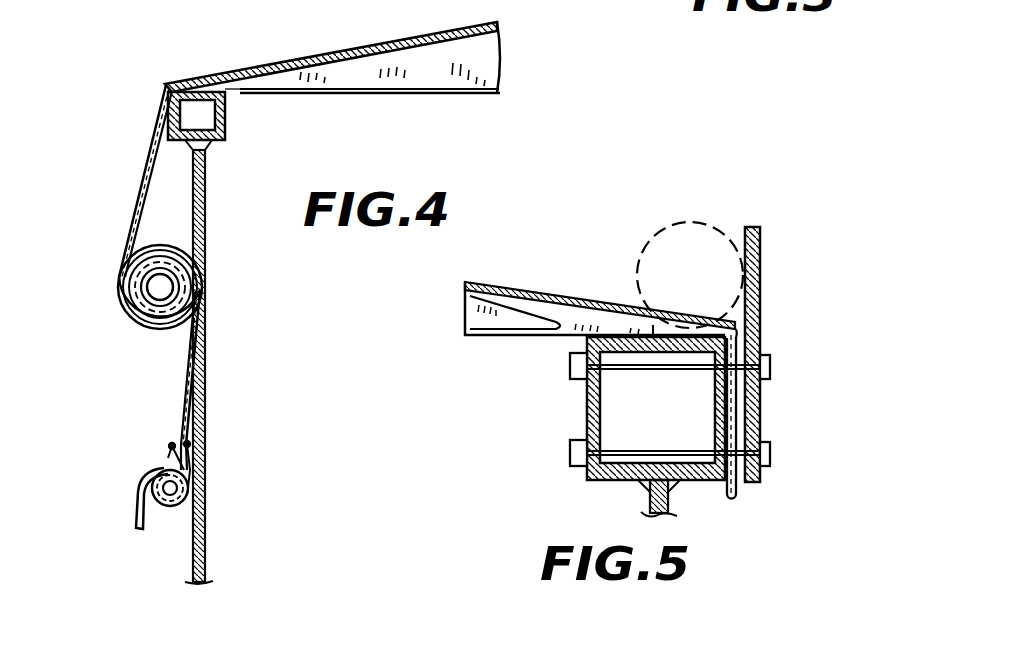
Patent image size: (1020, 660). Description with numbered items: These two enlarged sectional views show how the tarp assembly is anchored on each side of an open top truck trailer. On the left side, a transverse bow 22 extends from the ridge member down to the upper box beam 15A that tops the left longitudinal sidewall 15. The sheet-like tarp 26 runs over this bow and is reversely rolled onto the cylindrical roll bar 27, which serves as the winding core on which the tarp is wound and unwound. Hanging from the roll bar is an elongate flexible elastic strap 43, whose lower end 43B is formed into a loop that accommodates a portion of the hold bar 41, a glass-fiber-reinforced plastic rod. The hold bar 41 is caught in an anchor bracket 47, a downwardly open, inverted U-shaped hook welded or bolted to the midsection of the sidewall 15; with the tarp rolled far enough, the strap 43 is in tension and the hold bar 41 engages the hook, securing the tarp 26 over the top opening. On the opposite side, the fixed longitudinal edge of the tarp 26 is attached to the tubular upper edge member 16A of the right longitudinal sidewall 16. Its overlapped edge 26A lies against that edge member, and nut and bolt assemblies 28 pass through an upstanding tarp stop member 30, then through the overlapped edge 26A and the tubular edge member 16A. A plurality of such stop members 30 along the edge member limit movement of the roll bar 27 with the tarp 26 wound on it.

In FIG. 4, the transverse bow 22 is at (482, 64).
In FIG. 4, the upper box beam 15A is at (226, 122).
In FIG. 4, the left longitudinal sidewall 15 is at (196, 205).
In FIG. 4, the tarp 26 is at (152, 138).
In FIG. 5, the tarp 26 is at (547, 302).
In FIG. 4, the roll bar 27 is at (160, 330).
In FIG. 4, the elastic strap 43 is at (180, 393).
In FIG. 4, the strap end 43B is at (166, 468).
In FIG. 4, the hold bar 41 is at (172, 508).
In FIG. 4, the anchor bracket 47 is at (132, 512).
In FIG. 5, the upper edge member 16A is at (598, 482).
In FIG. 5, the overlapped edge 26A is at (770, 344).
In FIG. 5, the tarp stop member 30 is at (762, 330).
In FIG. 5, the nut and bolt assembly 28 is at (770, 383).
In FIG. 5, the right longitudinal sidewall 16 is at (672, 500).